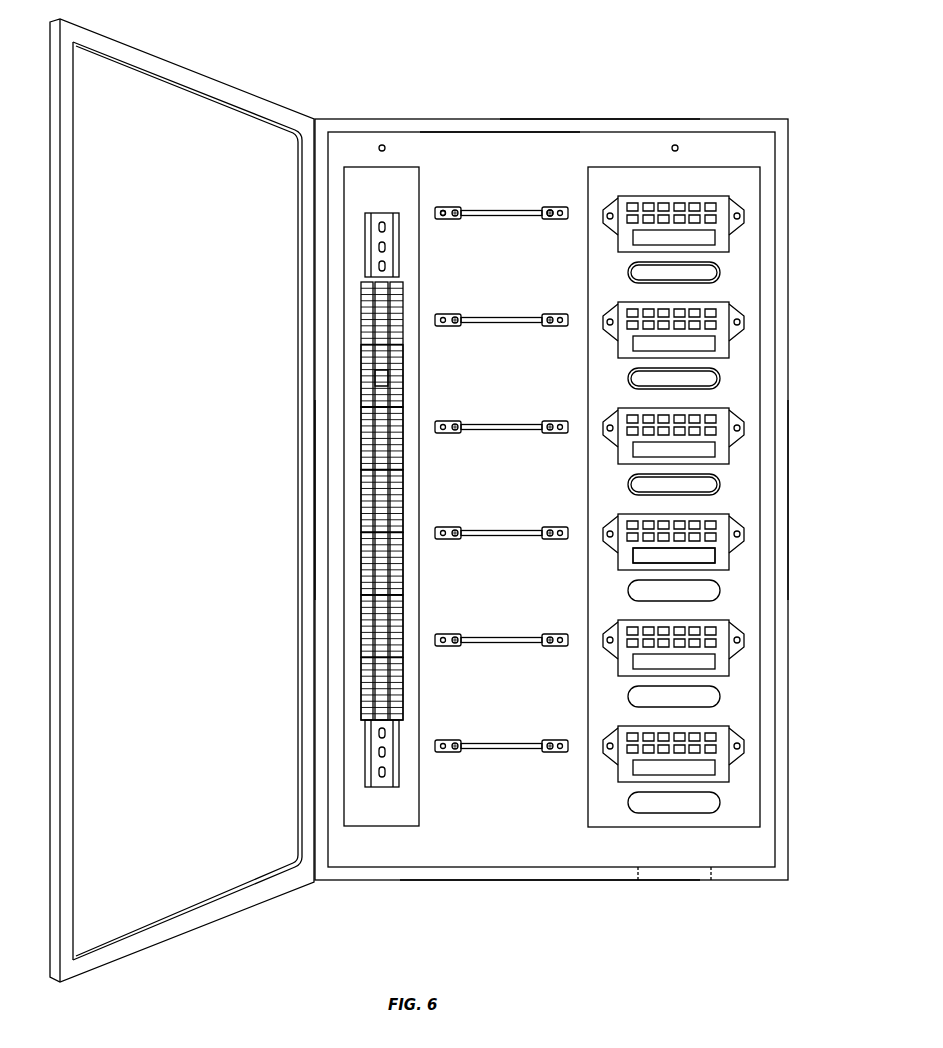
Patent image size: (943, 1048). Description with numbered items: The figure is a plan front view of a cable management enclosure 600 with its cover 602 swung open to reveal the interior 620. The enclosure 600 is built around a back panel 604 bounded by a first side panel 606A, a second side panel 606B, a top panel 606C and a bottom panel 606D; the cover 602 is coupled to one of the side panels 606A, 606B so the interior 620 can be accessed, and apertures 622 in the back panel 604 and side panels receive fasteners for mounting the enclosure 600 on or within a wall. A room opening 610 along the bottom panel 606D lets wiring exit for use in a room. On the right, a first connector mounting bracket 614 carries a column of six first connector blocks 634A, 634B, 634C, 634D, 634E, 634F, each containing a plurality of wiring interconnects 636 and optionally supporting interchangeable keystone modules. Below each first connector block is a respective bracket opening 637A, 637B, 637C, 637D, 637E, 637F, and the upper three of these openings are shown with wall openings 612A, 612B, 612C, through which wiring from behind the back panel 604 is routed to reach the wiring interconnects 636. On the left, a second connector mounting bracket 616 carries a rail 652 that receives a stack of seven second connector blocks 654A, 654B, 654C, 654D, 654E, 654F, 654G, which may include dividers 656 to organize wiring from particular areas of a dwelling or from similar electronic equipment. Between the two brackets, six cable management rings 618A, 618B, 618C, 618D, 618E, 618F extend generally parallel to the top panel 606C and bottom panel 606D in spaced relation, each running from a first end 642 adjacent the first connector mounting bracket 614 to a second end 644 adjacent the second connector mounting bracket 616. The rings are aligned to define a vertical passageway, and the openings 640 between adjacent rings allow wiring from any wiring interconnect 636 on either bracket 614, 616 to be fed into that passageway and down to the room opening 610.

The cable management enclosure 600 is at (703, 38).
The cover 602 is at (188, 68).
The back panel 604 is at (554, 152).
The first side panel 606A is at (789, 500).
The second side panel 606B is at (315, 500).
The top panel 606C is at (652, 120).
The bottom panel 606D is at (552, 880).
The room opening 610 is at (670, 873).
The wall opening 612A is at (650, 278).
The wall opening 612B is at (650, 384).
The wall opening 612C is at (650, 490).
The first connector mounting bracket 614 is at (675, 167).
The second connector mounting bracket 616 is at (383, 167).
The cable management ring 618A is at (502, 210).
The cable management ring 618B is at (502, 316).
The cable management ring 618C is at (502, 424).
The cable management ring 618D is at (502, 530).
The cable management ring 618E is at (502, 637).
The cable management ring 618F is at (502, 743).
The interior 620 is at (478, 133).
The aperture 622 is at (379, 148).
The first connector block 634A is at (699, 196).
The first connector block 634B is at (699, 302).
The first connector block 634C is at (699, 408).
The first connector block 634D is at (699, 514).
The first connector block 634E is at (699, 620).
The first connector block 634F is at (699, 726).
The wiring interconnect 636 is at (403, 378).
The bracket opening 637A is at (630, 266).
The bracket opening 637B is at (630, 372).
The bracket opening 637C is at (630, 478).
The bracket opening 637D is at (630, 584).
The bracket opening 637E is at (630, 690).
The bracket opening 637F is at (630, 796).
The opening 640 is at (513, 378).
The first end 642 is at (447, 206).
The second end 644 is at (548, 220).
The rail 652 is at (400, 243).
The second connector block 654A is at (405, 291).
The second connector block 654B is at (405, 348).
The second connector block 654C is at (405, 410).
The second connector block 654D is at (405, 500).
The second connector block 654E is at (405, 553).
The second connector block 654F is at (405, 605).
The second connector block 654G is at (405, 668).
The divider 656 is at (403, 468).